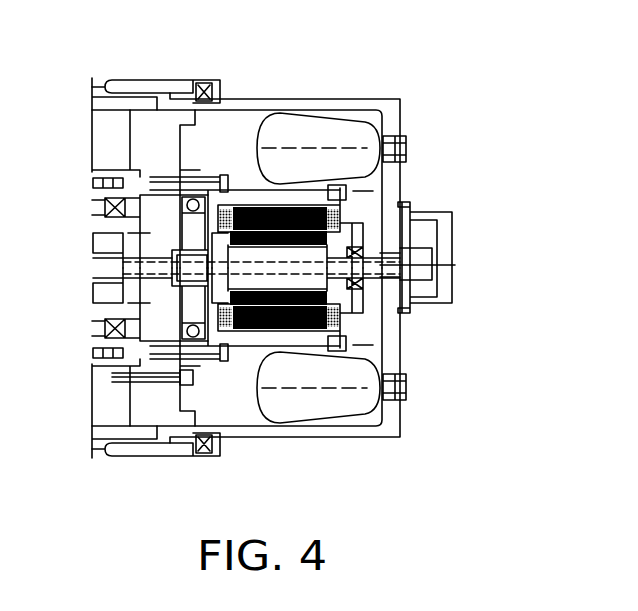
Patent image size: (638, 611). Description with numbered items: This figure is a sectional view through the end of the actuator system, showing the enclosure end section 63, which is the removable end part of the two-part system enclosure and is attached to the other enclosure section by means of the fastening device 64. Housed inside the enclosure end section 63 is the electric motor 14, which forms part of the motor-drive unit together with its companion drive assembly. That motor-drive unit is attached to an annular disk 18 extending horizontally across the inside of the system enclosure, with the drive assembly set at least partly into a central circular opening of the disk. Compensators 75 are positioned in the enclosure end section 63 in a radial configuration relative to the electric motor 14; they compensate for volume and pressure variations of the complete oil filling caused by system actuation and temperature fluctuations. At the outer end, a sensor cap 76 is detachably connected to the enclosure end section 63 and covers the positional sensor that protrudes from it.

The electric motor 14 is at (343, 208).
The annular disk 18 is at (182, 146).
The enclosure end section 63 is at (298, 99).
The fastening device 64 is at (155, 80).
The compensator 75 is at (357, 132).
The sensor cap 76 is at (447, 226).